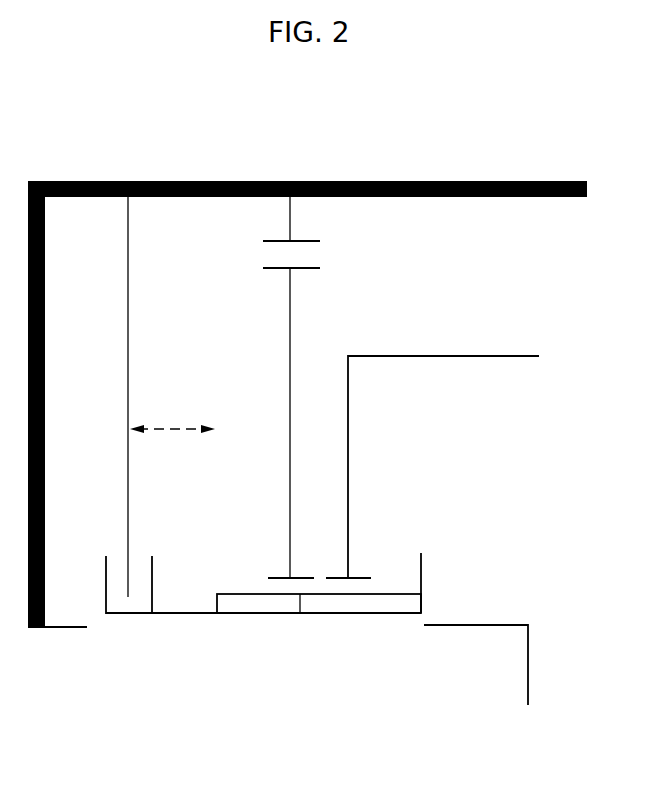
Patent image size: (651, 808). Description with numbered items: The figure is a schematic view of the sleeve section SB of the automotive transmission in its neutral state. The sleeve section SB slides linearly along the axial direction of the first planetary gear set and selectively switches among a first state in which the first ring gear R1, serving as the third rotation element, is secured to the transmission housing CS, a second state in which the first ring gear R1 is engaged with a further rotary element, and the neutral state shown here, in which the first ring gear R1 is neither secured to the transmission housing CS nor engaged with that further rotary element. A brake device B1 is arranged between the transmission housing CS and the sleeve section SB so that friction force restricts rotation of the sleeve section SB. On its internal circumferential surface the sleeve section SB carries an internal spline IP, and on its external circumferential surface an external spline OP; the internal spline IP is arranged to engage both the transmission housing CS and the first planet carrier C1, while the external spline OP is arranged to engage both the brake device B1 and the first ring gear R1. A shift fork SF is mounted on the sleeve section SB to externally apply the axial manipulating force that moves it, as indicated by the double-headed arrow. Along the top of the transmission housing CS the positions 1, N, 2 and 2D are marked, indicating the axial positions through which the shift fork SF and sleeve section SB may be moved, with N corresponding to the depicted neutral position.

The first speed position 1 is at (76, 165).
The neutral position N is at (128, 165).
The second speed position 2 is at (180, 165).
The second speed direct position 2D is at (241, 165).
The transmission housing CS is at (466, 181).
The shift fork SF is at (129, 317).
The brake device B1 is at (336, 255).
The first ring gear R1 is at (487, 356).
The external spline OP is at (390, 594).
The internal spline IP is at (167, 613).
The sleeve section SB is at (237, 628).
The first planet carrier C1 is at (493, 625).